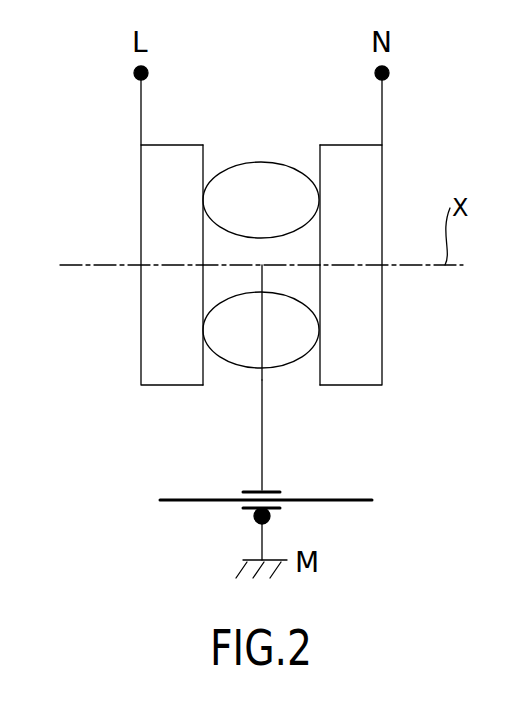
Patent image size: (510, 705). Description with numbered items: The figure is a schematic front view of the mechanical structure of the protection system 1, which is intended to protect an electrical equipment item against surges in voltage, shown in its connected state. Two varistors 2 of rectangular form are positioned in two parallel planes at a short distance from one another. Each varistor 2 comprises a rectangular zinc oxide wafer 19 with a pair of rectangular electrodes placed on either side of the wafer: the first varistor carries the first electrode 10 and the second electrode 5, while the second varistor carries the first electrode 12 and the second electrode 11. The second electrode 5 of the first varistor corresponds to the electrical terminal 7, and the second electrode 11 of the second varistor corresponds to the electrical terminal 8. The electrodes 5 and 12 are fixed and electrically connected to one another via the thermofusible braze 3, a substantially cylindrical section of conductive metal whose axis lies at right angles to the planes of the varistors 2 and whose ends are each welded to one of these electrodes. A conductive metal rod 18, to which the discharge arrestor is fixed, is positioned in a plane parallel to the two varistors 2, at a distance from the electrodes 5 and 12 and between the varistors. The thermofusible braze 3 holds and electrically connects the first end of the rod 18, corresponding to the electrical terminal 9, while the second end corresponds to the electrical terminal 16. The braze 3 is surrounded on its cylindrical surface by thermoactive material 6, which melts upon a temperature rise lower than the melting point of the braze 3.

The protection system 1 is at (90, 231).
The varistor 2 is at (357, 238).
The thermofusible braze 3 is at (279, 279).
The second electrode 5 is at (203, 152).
The thermoactive material 6 is at (262, 190).
The electrical terminal 7 is at (203, 386).
The electrical terminal 8 is at (320, 386).
The electrical terminal 9 is at (260, 267).
The first electrode 10 is at (140, 157).
The second electrode 11 is at (382, 172).
The first electrode 12 is at (318, 152).
The electrical terminal 16 is at (253, 517).
The conductive metal rod 18 is at (262, 450).
The zinc oxide wafer 19 is at (340, 340).